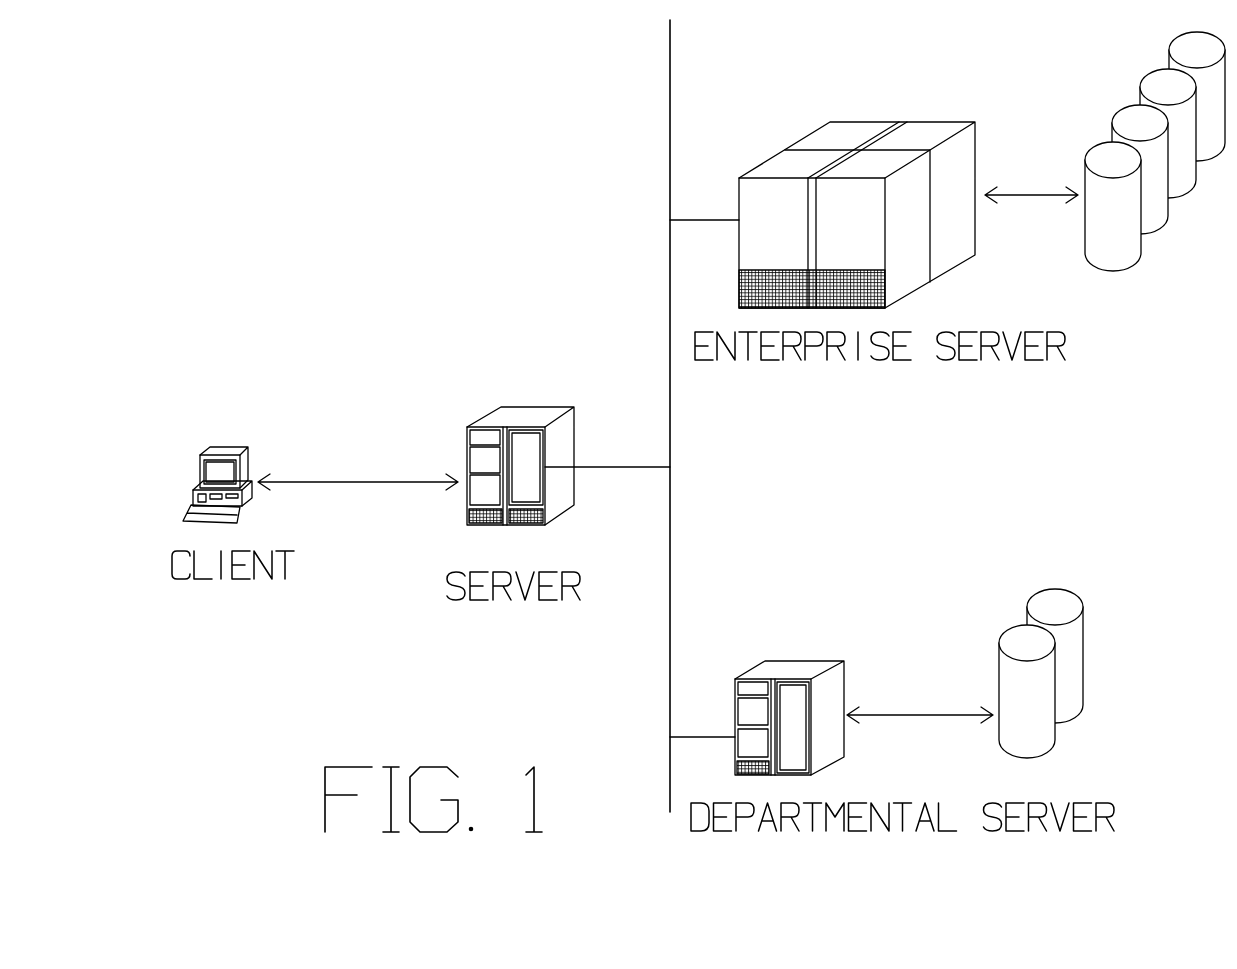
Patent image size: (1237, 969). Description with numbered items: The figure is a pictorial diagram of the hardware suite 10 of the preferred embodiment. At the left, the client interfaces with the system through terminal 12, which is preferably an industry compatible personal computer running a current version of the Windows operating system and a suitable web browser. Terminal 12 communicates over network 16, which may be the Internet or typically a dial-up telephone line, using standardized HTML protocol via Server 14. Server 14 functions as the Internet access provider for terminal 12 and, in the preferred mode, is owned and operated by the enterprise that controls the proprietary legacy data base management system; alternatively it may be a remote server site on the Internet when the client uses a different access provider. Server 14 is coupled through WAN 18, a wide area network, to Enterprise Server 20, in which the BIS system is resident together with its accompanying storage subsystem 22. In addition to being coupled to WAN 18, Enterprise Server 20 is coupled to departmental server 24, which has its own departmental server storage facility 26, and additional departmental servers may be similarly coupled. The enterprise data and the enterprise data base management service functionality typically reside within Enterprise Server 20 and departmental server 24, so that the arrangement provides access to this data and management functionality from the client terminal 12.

The hardware suite 10 is at (533, 183).
The terminal 12 is at (218, 450).
The server 14 is at (543, 417).
The network 16 is at (305, 483).
The WAN 18 is at (670, 385).
The Enterprise Server 20 is at (842, 132).
The storage subsystem 22 is at (1160, 77).
The departmental server 24 is at (771, 666).
The departmental server storage facility 26 is at (1052, 602).